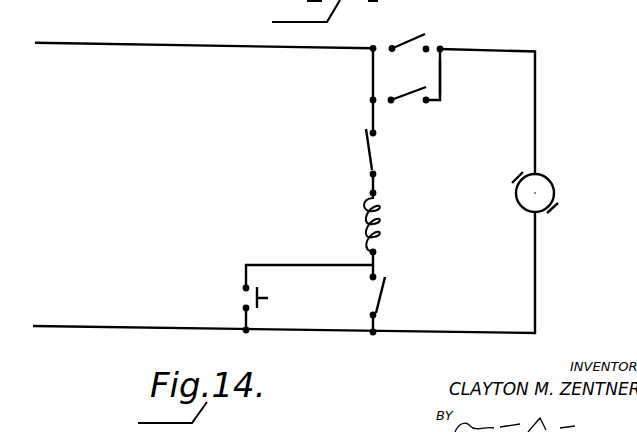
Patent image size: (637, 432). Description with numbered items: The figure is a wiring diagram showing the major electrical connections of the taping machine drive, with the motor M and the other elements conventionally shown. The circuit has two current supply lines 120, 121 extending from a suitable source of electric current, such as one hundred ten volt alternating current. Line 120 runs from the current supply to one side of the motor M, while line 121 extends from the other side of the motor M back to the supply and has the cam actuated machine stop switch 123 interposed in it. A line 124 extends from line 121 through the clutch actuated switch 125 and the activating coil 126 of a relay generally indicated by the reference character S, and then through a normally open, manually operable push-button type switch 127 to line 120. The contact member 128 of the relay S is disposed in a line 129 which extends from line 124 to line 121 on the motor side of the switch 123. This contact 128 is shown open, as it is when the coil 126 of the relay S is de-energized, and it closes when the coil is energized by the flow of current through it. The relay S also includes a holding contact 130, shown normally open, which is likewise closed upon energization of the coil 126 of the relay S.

The current supply line 120 is at (100, 322).
The current supply line 121 is at (106, 40).
The cam actuated machine stop switch 123 is at (409, 39).
The line 124 is at (372, 78).
The clutch actuated switch 125 is at (377, 158).
The activating coil 126 is at (381, 222).
The push-button type switch 127 is at (252, 298).
The contact member 128 is at (410, 93).
The line 129 is at (442, 80).
The holding contact 130 is at (385, 300).
The relay S is at (362, 200).
The motor M is at (556, 192).